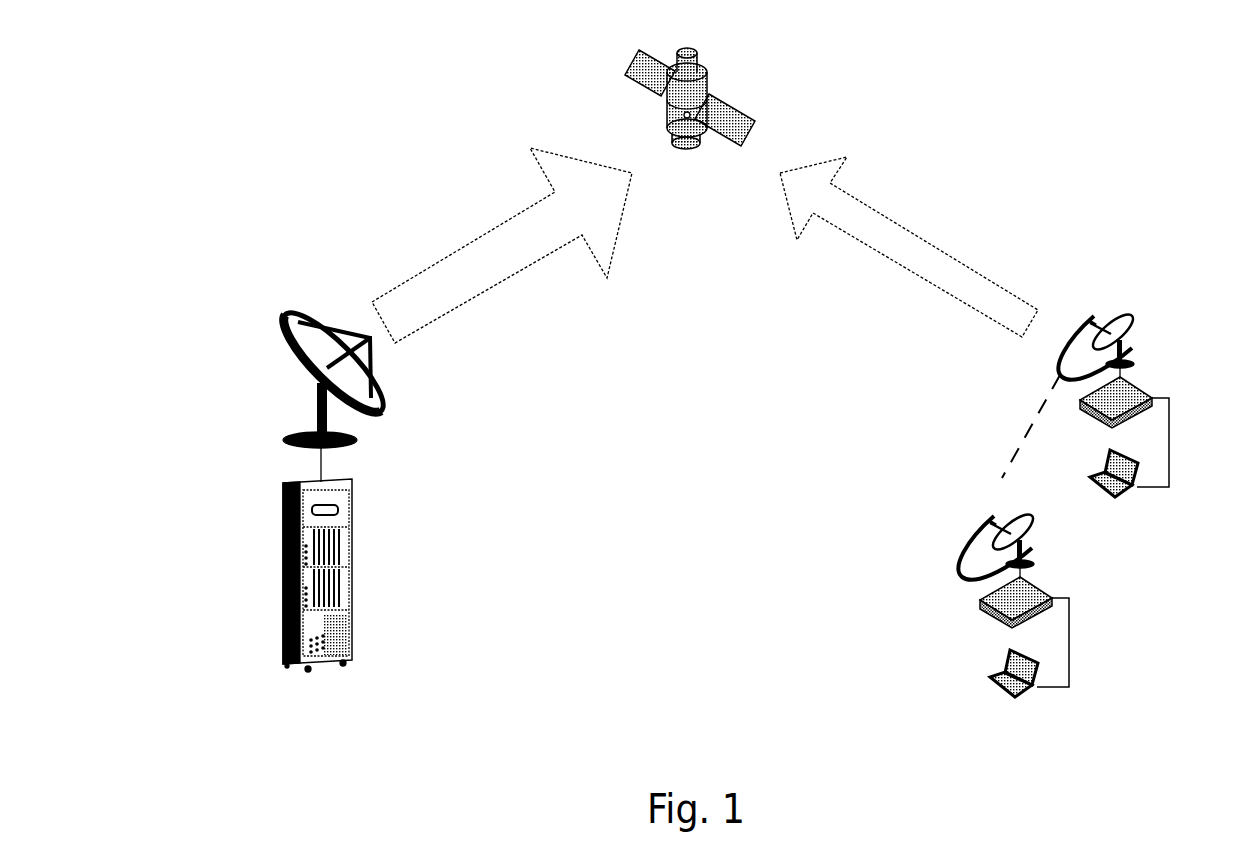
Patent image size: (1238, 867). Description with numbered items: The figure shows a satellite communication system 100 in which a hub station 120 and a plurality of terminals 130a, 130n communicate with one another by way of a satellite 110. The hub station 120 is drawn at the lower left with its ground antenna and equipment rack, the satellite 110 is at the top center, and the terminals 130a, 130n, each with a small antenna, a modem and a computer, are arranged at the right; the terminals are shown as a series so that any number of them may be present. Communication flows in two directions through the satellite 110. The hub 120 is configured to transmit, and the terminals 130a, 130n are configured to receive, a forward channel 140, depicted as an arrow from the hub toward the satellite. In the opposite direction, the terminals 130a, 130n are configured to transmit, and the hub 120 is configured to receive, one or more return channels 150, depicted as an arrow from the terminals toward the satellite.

The satellite communication system 100 is at (114, 88).
The satellite 110 is at (690, 82).
The hub station 120 is at (313, 486).
The terminal 130a is at (1142, 403).
The terminal 130n is at (1043, 536).
The forward channel 140 is at (502, 245).
The return channels 150 is at (909, 247).